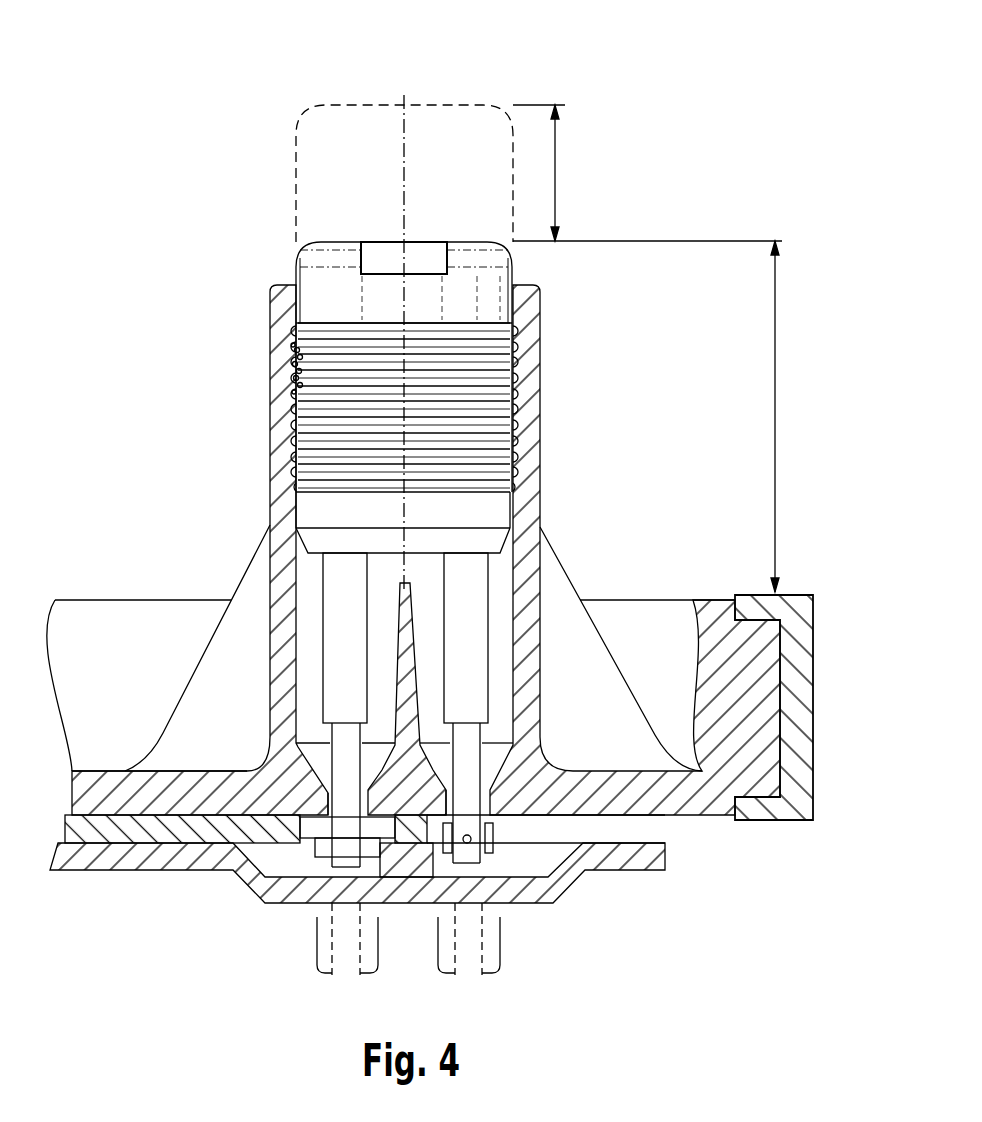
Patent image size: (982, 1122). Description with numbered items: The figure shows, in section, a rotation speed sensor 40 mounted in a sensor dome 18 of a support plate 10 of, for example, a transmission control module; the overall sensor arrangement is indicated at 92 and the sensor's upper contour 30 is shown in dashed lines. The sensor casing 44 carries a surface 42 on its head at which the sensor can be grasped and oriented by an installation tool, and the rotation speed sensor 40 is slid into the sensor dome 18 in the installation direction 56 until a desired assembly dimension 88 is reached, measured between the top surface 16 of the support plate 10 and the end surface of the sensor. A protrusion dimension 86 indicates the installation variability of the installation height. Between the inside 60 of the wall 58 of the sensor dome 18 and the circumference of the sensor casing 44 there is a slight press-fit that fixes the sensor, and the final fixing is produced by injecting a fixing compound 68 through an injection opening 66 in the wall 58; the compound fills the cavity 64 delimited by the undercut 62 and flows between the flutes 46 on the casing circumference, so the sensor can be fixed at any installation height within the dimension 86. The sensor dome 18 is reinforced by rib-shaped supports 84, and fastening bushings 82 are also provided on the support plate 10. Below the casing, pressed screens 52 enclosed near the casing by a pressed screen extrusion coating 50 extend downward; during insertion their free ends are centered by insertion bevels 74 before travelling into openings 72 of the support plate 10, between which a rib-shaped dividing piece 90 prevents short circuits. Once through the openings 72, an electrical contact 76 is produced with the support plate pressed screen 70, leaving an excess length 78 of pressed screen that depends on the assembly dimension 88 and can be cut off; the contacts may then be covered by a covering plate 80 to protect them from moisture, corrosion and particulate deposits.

The sensor assembly 92 is at (240, 104).
The sensor plug outline 30 is at (406, 160).
The rotation speed sensor 40 is at (364, 210).
The surface 42 is at (421, 262).
The sensor casing 44 is at (506, 280).
The installation direction 56 is at (335, 262).
The protrusion dimension 86 is at (647, 173).
The assembly dimension 88 is at (806, 416).
The sensor dome 18 is at (527, 430).
The cavity 64 is at (513, 338).
The undercut 62 is at (513, 366).
The flutes 46 is at (296, 452).
The fixing compound 68 is at (293, 360).
The injection opening 66 is at (292, 374).
The inside of the wall 60 is at (296, 496).
The wall 58 is at (513, 488).
The pressed screen extrusion coating 50 is at (340, 605).
The pressed screens 52 is at (330, 745).
The rib-shaped dividing piece 90 is at (415, 645).
The insertion bevels 74 is at (312, 785).
The openings 72 is at (305, 815).
The electrical contact 76 is at (373, 878).
The excess length of pressed screen 78 is at (317, 917).
The covering plate 80 is at (643, 856).
The support plate pressed screen 70 is at (110, 845).
The support plate 10 is at (108, 793).
The top surface 16 is at (665, 600).
The rib-shaped supports 84 is at (197, 678).
The fastening bushings 82 is at (758, 605).